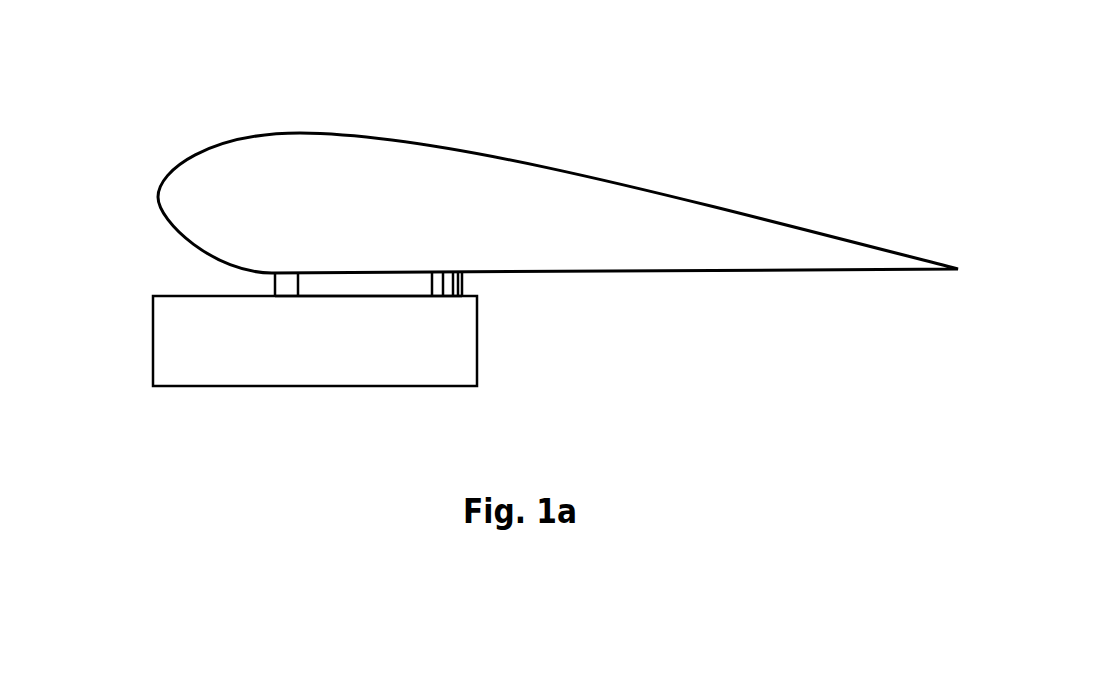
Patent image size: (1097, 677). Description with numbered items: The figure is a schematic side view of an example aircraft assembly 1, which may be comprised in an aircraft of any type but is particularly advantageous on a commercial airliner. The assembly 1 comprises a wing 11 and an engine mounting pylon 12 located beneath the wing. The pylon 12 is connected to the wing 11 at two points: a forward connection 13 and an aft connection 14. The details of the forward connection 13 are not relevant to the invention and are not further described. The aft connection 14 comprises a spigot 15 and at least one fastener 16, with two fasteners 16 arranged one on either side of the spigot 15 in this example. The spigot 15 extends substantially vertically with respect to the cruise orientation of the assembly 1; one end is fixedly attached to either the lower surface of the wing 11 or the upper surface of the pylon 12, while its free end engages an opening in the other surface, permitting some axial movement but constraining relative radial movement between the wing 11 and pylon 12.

The aircraft assembly 1 is at (152, 100).
The wing 11 is at (452, 188).
The engine mounting pylon 12 is at (195, 363).
The forward connection 13 is at (275, 283).
The aft connection 14 is at (478, 283).
The spigot 15 is at (468, 283).
The fastener 16 is at (445, 282).